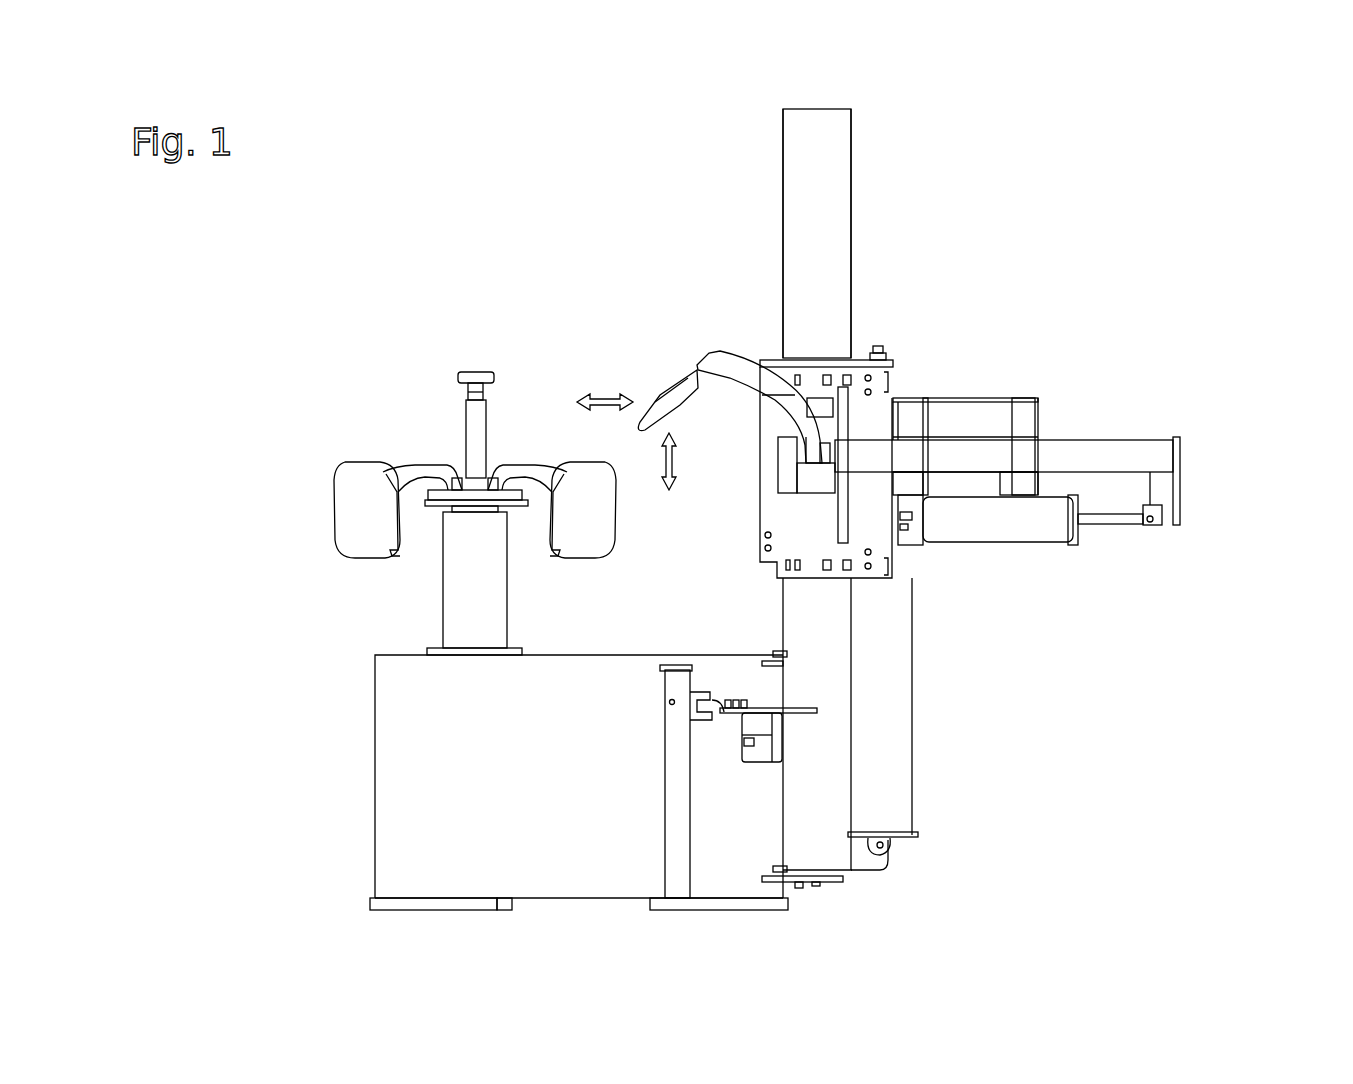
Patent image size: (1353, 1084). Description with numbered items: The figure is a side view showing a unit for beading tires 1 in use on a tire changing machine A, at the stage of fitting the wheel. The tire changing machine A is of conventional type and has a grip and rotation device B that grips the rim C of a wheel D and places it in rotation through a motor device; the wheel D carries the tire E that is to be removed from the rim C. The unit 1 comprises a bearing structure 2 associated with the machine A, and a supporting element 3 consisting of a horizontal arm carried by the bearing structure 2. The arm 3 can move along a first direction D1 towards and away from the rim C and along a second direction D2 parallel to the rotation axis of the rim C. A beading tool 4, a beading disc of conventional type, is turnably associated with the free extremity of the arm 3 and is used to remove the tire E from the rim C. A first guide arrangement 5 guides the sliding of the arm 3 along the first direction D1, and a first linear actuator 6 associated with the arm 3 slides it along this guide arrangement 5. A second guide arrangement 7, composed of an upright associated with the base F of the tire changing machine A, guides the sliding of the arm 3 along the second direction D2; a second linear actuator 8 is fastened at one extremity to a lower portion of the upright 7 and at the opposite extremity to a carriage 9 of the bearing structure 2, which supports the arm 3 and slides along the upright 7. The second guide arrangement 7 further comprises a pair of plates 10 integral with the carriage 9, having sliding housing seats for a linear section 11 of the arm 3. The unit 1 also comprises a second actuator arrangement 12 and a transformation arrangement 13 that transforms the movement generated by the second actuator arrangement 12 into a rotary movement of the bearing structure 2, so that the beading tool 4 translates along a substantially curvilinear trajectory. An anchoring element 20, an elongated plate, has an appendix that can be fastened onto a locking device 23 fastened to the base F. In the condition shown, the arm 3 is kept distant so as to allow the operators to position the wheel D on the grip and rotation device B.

The unit for beading tires 1 is at (1240, 165).
The bearing structure 2 is at (870, 148).
The supporting element 3 is at (733, 365).
The beading tool 4 is at (665, 388).
The first guide arrangement 5 is at (955, 380).
The first linear actuator 6 is at (1000, 518).
The second guide arrangement 7 is at (828, 224).
The second linear actuator 8 is at (880, 718).
The carriage 9 is at (898, 368).
The pair of plates 10 is at (920, 482).
The linear section 11 is at (1110, 452).
The second actuator arrangement 12 is at (785, 732).
The transformation arrangement 13 is at (778, 705).
The anchoring element 20 is at (722, 695).
The locking device 23 is at (650, 672).
The tire changing machine A is at (330, 705).
The grip and rotation device B is at (445, 345).
The rim C is at (405, 468).
The wheel D is at (320, 468).
The tire E is at (350, 525).
The base F is at (400, 800).
The first direction D1 is at (600, 395).
The second direction D2 is at (668, 458).